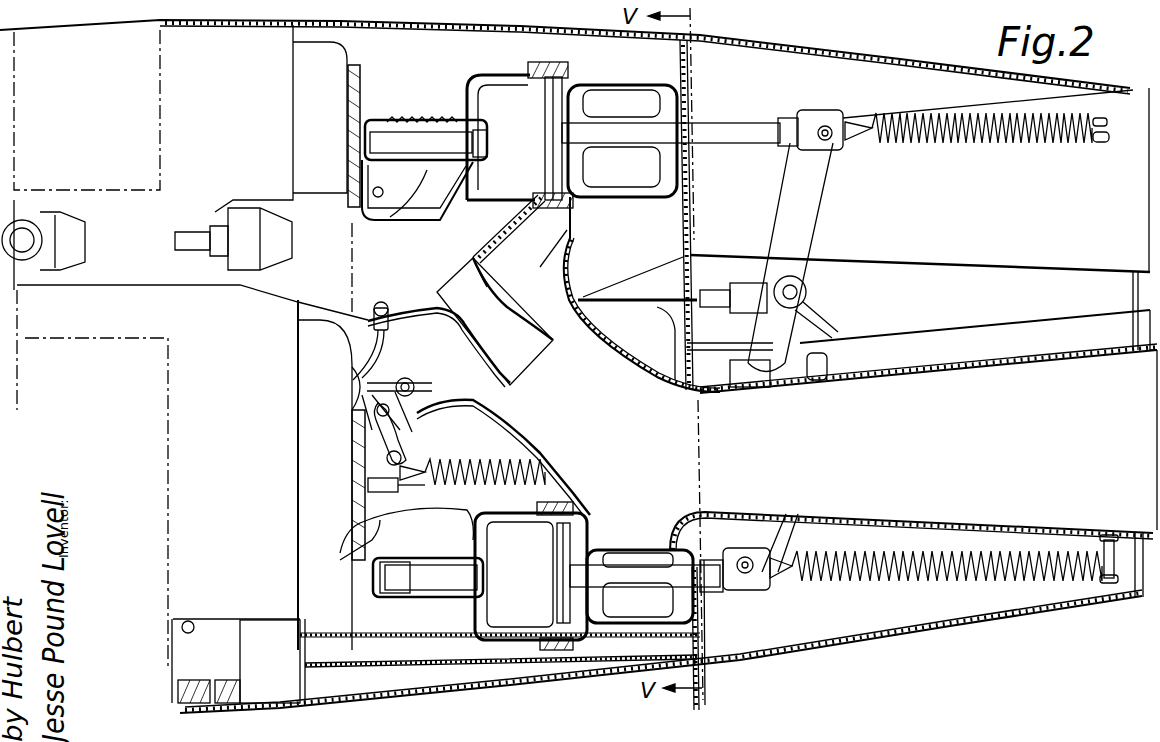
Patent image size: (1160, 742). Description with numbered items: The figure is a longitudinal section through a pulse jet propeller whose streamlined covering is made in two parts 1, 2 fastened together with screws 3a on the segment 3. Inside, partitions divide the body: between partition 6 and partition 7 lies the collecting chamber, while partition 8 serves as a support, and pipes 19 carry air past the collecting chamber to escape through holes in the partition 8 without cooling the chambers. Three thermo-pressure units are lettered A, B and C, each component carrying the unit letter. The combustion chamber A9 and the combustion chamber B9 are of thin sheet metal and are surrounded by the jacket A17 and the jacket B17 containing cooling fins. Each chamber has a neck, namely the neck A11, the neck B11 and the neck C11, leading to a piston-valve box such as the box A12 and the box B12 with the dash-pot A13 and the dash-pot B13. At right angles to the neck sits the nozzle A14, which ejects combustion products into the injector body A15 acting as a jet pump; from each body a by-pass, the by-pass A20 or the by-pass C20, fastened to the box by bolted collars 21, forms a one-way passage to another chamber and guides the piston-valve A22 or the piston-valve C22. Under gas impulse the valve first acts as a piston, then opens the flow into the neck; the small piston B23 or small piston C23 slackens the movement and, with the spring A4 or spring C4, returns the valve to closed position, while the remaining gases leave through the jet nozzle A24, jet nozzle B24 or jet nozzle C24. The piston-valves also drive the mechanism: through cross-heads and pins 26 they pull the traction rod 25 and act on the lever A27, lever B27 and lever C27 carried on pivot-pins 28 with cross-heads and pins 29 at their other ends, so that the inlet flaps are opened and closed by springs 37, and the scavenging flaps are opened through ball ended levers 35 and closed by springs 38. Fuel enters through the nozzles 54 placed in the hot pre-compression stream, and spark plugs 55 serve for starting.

The streamlined body part 1 is at (84, 28).
The streamlined body part 2 is at (905, 66).
The segment 3 is at (198, 680).
The screws 3a is at (240, 695).
The partition 6 is at (310, 684).
The partition 7 is at (703, 602).
The partition 8 is at (1132, 298).
The pipes 19 is at (695, 672).
The bolted collars 21 is at (537, 62).
The traction rod 25 is at (638, 302).
The cross-heads and pins 26 is at (808, 142).
The pivot-pins 28 is at (798, 292).
The cross-heads and pins 29 is at (714, 292).
The ball ended levers 35 is at (382, 172).
The springs 37 is at (375, 493).
The springs 38 is at (408, 120).
The fuel nozzles 54 is at (380, 302).
The spark plugs 55 is at (60, 236).
The spring of unit A A4 is at (958, 580).
The combustion chamber of unit A A9 is at (326, 124).
The neck of unit A A11 is at (495, 241).
The piston-valve box of unit A A12 is at (501, 137).
The dash-pot of unit A A13 is at (426, 140).
The nozzle of unit A A14 is at (460, 322).
The injector body of unit A A15 is at (630, 244).
The jacket of unit A A17 is at (192, 172).
The by-pass of unit A A20 is at (640, 586).
The piston-valve of unit A A22 is at (592, 565).
The jet nozzle of unit A A24 is at (1057, 440).
The lever of unit A A27 is at (782, 555).
The combustion chamber of unit B B9 is at (331, 475).
The neck of unit B B11 is at (465, 476).
The piston-valve box of unit B B12 is at (531, 576).
The dash-pot of unit B B13 is at (388, 590).
The jacket of unit B B17 is at (209, 586).
The small piston of unit B B23 is at (385, 566).
The jet nozzle of unit B B24 is at (928, 351).
The lever of unit B B27 is at (825, 330).
The spring of unit C C4 is at (1018, 140).
The neck of unit C C11 is at (392, 381).
The by-pass of unit C C20 is at (622, 141).
The piston-valve of unit C C22 is at (722, 124).
The small piston of unit C C23 is at (480, 158).
The jet nozzle of unit C C24 is at (920, 180).
The lever of unit C C27 is at (810, 212).